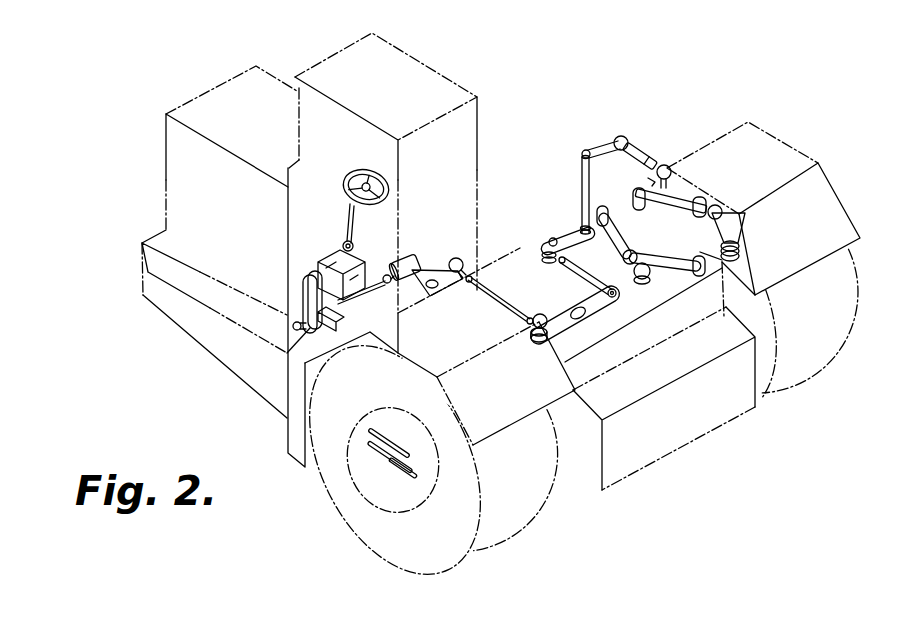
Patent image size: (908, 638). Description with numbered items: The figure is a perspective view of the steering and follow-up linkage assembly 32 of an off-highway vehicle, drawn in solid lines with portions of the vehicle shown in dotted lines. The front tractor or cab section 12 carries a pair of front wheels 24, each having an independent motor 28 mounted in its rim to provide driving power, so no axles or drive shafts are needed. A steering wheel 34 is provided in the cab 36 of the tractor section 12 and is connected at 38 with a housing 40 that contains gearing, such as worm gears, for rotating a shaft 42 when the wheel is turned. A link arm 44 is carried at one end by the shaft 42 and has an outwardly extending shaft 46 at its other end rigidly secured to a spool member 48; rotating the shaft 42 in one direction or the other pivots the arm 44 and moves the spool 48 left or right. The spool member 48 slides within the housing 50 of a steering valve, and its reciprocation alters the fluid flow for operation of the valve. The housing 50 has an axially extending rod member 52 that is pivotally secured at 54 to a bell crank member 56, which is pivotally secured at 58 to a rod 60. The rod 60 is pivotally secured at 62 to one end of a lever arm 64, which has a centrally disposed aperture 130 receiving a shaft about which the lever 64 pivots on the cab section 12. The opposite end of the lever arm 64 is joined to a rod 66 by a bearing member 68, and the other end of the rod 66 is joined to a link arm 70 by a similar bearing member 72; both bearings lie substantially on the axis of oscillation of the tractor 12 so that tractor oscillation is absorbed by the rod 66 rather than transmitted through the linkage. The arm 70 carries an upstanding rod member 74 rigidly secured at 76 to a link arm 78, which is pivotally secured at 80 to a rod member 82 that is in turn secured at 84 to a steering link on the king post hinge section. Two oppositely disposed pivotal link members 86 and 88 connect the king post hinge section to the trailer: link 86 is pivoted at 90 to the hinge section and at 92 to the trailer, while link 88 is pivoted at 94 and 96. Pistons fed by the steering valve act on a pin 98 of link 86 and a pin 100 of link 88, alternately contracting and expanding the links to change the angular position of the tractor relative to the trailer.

The front tractor or cab section 12 is at (431, 92).
The front wheels 24 is at (846, 305).
The motor 28 is at (385, 488).
The follow-up linkage assembly 32 is at (599, 150).
The steering wheel 34 is at (388, 193).
The cab 36 is at (468, 128).
The connection 38 is at (354, 247).
The housing 40 is at (337, 268).
The shaft 42 is at (306, 283).
The link arm 44 is at (308, 306).
The outwardly extending shaft 46 is at (287, 355).
The spool member 48 is at (293, 327).
The housing of steering valve 50 is at (325, 320).
The rod member 52 is at (370, 292).
The pivotal connection 54 is at (411, 262).
The bell crank member 56 is at (440, 275).
The pivotal connection 58 is at (464, 264).
The rod 60 is at (498, 297).
The pivotal connection 62 is at (541, 314).
The lever arm 64 is at (572, 327).
The rod 66 is at (588, 277).
The bearing member 68 is at (617, 301).
The link arm 70 is at (555, 234).
The bearing member 72 is at (546, 255).
The upstanding rod member 74 is at (588, 200).
The rigid connection 76 is at (586, 150).
The link arm 78 is at (641, 150).
The pivotal connection 80 is at (623, 136).
The rod member 82 is at (647, 162).
The connection 84 is at (670, 167).
The pivotal link member 86 is at (727, 212).
The pivotal link member 88 is at (653, 259).
The pivotal connection 90 is at (640, 209).
The pivotal connection 92 is at (740, 250).
The pivotal connection 94 is at (636, 211).
The pivotal connection 96 is at (689, 310).
The pin 98 is at (740, 214).
The pin 100 is at (651, 276).
The aperture 130 is at (590, 316).